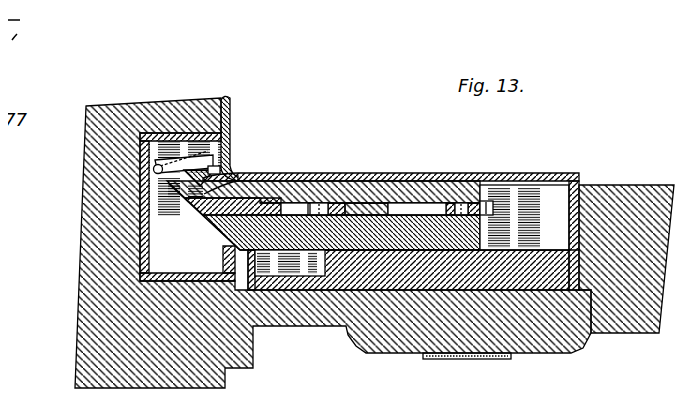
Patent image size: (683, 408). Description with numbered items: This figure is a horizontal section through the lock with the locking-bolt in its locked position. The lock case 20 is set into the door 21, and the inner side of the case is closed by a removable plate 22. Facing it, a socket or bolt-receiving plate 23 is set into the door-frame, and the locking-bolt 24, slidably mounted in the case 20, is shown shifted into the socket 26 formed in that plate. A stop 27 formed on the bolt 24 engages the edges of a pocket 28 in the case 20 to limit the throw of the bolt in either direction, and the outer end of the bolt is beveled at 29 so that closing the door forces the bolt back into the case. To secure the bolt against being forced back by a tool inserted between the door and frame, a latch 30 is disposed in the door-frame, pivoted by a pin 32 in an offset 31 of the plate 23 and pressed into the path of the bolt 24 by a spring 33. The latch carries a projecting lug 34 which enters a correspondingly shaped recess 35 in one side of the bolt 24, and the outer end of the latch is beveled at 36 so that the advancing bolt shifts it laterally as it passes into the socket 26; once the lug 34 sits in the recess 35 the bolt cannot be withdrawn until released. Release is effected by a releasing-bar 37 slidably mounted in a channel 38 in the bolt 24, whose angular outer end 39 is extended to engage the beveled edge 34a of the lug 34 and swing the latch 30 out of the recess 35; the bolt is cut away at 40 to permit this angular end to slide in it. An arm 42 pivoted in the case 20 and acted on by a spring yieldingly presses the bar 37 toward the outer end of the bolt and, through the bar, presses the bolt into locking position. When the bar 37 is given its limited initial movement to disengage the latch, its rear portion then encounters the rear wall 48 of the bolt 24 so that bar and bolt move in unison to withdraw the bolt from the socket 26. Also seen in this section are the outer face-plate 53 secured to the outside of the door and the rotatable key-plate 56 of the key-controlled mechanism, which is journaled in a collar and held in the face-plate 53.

The case 20 is at (563, 193).
The door 21 is at (623, 315).
The removable plate 22 is at (337, 163).
The socket or bolt-receiving plate 23 is at (130, 253).
The locking-bolt 24 is at (388, 180).
The socket 26 is at (133, 226).
The stop 27 is at (246, 243).
The pocket 28 is at (302, 257).
The beveled outer end of bolt 29 is at (203, 208).
The latch 30 is at (190, 160).
The offset 31 is at (225, 108).
The pin 32 is at (146, 162).
The spring 33 is at (168, 150).
The projecting lug 34 is at (230, 150).
The beveled edge of lug 34a is at (165, 181).
The recess 35 is at (171, 220).
The beveled outer end of latch 36 is at (232, 170).
The releasing-bar 37 is at (258, 198).
The channel 38 is at (358, 193).
The angular outer end 39 is at (160, 187).
The cut-away 40 is at (232, 178).
The arm 42 is at (290, 195).
The rear wall of bolt 48 is at (477, 200).
The outer face-plate 53 is at (378, 338).
The rotatable key-plate 56 is at (456, 345).